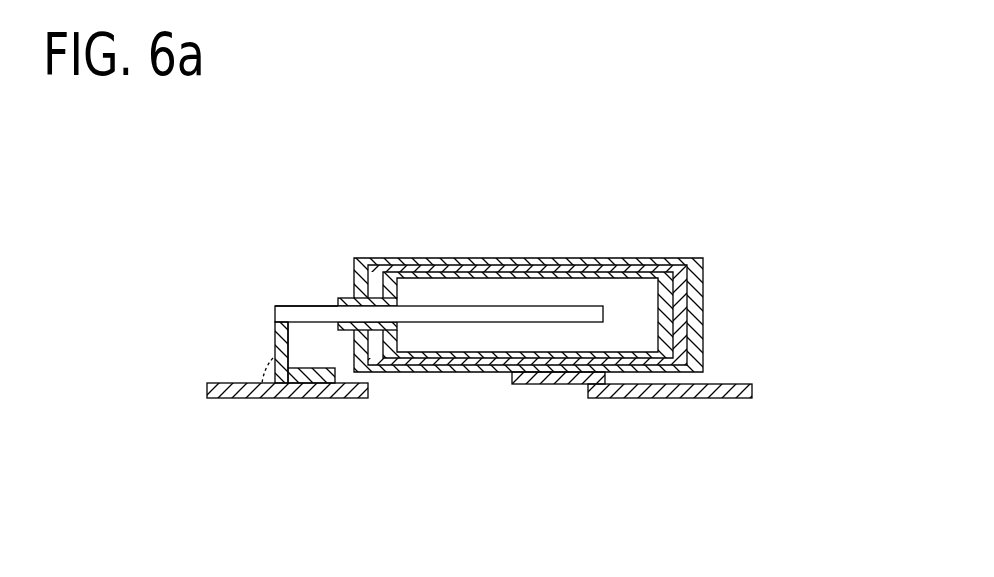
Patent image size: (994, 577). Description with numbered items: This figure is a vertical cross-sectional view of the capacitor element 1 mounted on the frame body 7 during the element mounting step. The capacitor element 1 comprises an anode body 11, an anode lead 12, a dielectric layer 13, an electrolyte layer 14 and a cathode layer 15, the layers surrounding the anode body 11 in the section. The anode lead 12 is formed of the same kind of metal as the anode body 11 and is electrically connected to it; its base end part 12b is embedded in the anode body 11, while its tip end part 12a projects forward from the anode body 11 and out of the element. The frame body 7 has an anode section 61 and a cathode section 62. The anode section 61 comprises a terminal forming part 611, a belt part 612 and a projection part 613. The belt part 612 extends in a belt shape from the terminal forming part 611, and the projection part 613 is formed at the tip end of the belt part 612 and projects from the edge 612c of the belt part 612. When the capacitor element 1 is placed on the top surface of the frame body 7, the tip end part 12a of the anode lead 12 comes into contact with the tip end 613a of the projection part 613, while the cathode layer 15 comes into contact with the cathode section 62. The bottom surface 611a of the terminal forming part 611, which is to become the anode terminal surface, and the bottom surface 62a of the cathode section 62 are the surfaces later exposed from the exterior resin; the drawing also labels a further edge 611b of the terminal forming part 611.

The capacitor element 1 is at (270, 185).
The anode body 11 is at (500, 290).
The anode lead 12 is at (470, 313).
The tip end part 12a is at (330, 313).
The base end part 12b is at (552, 313).
The dielectric layer 13 is at (428, 268).
The electrolyte layer 14 is at (383, 263).
The cathode layer 15 is at (357, 258).
The anode section 61 is at (220, 468).
The terminal forming part 611 is at (335, 390).
The bottom surface 611a is at (358, 400).
The substrate edge 611b is at (215, 383).
The belt part 612 is at (297, 377).
The edge 612c is at (273, 358).
The projection part 613 is at (270, 383).
The tip end 613a is at (276, 308).
The cathode section 62 is at (672, 398).
The bottom surface 62a is at (642, 400).
The frame body 7 is at (755, 380).